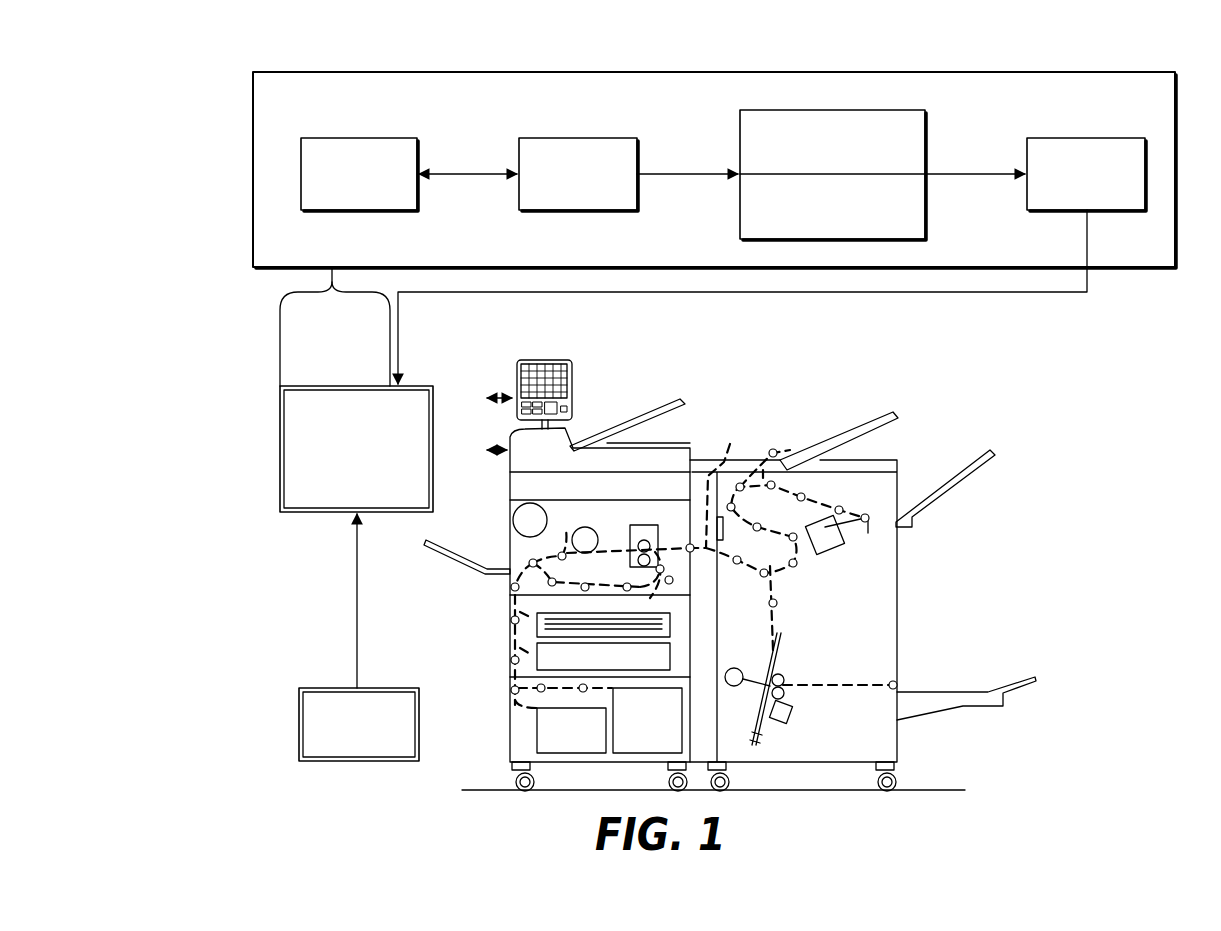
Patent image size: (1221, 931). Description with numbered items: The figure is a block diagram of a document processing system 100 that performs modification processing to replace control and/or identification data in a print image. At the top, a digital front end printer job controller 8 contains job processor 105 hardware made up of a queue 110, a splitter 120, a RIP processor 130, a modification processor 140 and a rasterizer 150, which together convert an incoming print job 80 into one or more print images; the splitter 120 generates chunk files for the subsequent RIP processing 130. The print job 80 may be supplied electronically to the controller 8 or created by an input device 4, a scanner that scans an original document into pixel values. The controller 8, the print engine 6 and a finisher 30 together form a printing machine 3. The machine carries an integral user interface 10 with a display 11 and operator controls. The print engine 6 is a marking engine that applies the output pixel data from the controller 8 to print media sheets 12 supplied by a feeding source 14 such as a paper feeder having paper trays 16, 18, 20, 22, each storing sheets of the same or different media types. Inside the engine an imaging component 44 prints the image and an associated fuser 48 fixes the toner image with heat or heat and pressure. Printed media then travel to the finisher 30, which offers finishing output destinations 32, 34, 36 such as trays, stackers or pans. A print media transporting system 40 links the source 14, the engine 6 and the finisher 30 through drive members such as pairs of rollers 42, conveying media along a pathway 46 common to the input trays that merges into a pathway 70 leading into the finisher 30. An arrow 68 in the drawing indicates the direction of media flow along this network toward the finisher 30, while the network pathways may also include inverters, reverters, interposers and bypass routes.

The document processing system 100 is at (218, 80).
The job processor 105 is at (712, 72).
The queue 110 is at (358, 138).
The splitter 120 is at (578, 138).
The RIP processor 130 is at (740, 125).
The modification processor 140 is at (740, 222).
The rasterizer 150 is at (1085, 138).
The digital front end printer job controller 8 is at (280, 448).
The print job 80 is at (357, 762).
The printing machine 3 is at (428, 600).
The input device 4 is at (688, 405).
The user interface 10 is at (574, 392).
The display 11 is at (524, 380).
The print engine 6 is at (515, 544).
The print media sheets 12 is at (660, 637).
The feeding source 14 is at (507, 616).
The paper tray 16 is at (537, 628).
The paper tray 18 is at (537, 657).
The paper tray 20 is at (560, 762).
The paper tray 22 is at (623, 762).
The finisher 30 is at (918, 577).
The finishing output destination 32 is at (893, 426).
The finishing output destination 34 is at (960, 478).
The finishing output destination 36 is at (932, 692).
The print media transporting system 40 is at (702, 576).
The pairs of rollers 42 is at (537, 563).
The imaging component 44 is at (590, 533).
The pathway 46 is at (543, 520).
The fuser 48 is at (630, 566).
The sheet transport path 68 is at (674, 530).
The pathway 70 is at (778, 499).